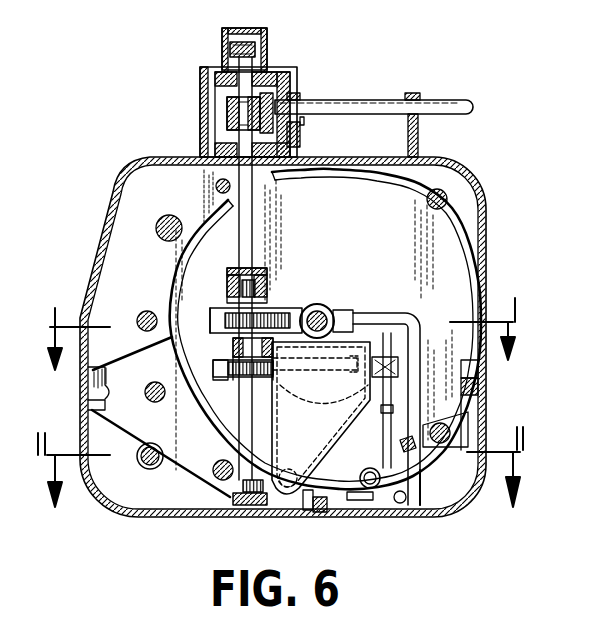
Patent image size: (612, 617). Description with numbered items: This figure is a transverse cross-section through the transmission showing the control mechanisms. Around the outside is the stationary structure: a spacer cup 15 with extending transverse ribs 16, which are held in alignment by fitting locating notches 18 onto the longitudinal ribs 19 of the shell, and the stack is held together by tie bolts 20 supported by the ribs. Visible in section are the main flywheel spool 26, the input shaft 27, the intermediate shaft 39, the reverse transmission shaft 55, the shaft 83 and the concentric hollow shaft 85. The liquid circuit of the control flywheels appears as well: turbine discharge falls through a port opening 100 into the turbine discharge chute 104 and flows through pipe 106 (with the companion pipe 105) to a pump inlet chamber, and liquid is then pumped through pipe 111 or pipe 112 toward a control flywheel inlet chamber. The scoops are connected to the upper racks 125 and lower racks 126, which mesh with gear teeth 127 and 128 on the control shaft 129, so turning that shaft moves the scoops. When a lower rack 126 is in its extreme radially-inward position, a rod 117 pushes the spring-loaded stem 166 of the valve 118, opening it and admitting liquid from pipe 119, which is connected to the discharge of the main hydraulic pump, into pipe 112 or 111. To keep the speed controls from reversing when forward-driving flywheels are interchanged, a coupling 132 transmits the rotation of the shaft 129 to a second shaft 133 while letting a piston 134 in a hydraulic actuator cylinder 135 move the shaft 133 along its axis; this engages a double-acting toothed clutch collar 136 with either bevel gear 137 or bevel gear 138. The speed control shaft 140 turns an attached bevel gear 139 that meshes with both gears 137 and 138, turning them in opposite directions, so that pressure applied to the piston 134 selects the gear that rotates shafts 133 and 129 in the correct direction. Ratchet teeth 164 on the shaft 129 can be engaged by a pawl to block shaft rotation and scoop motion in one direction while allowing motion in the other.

The spacer cup 15 is at (455, 247).
The transverse ribs 16 is at (447, 203).
The locating notches 18 is at (104, 403).
The longitudinal ribs 19 is at (93, 373).
The tie bolts 20 is at (215, 188).
The main flywheel spool 26 is at (325, 305).
The input shaft 27 is at (140, 316).
The intermediate shaft 39 is at (353, 310).
The reverse transmission shaft 55 is at (158, 232).
The shaft 83 is at (157, 467).
The hollow shaft 85 is at (147, 467).
The port openings 100 is at (287, 393).
The turbine discharge chute 104 is at (350, 502).
The pipe 105 is at (402, 505).
The pipe 106 is at (300, 502).
The pipe 111 is at (421, 505).
The pipe 112 is at (421, 482).
The rod 117 is at (306, 368).
The valve 118 is at (398, 368).
The pipe 119 is at (387, 418).
The upper racks 125 is at (278, 315).
The lower racks 126 is at (233, 375).
The gear teeth 127 is at (222, 308).
The gear teeth 128 is at (233, 348).
The shaft in control system 129 is at (248, 423).
The coupling 132 is at (267, 281).
The second shaft in control system 133 is at (252, 229).
The piston 134 is at (233, 30).
The actuator cylinder 135 is at (265, 50).
The toothed clutch collar 136 is at (228, 112).
The bevel gear 137 is at (206, 79).
The bevel gear 138 is at (205, 138).
The bevel gear 139 is at (300, 130).
The speed control shaft 140 is at (336, 100).
The ratchet teeth 164 is at (238, 491).
The spring-loaded stem 166 is at (352, 405).